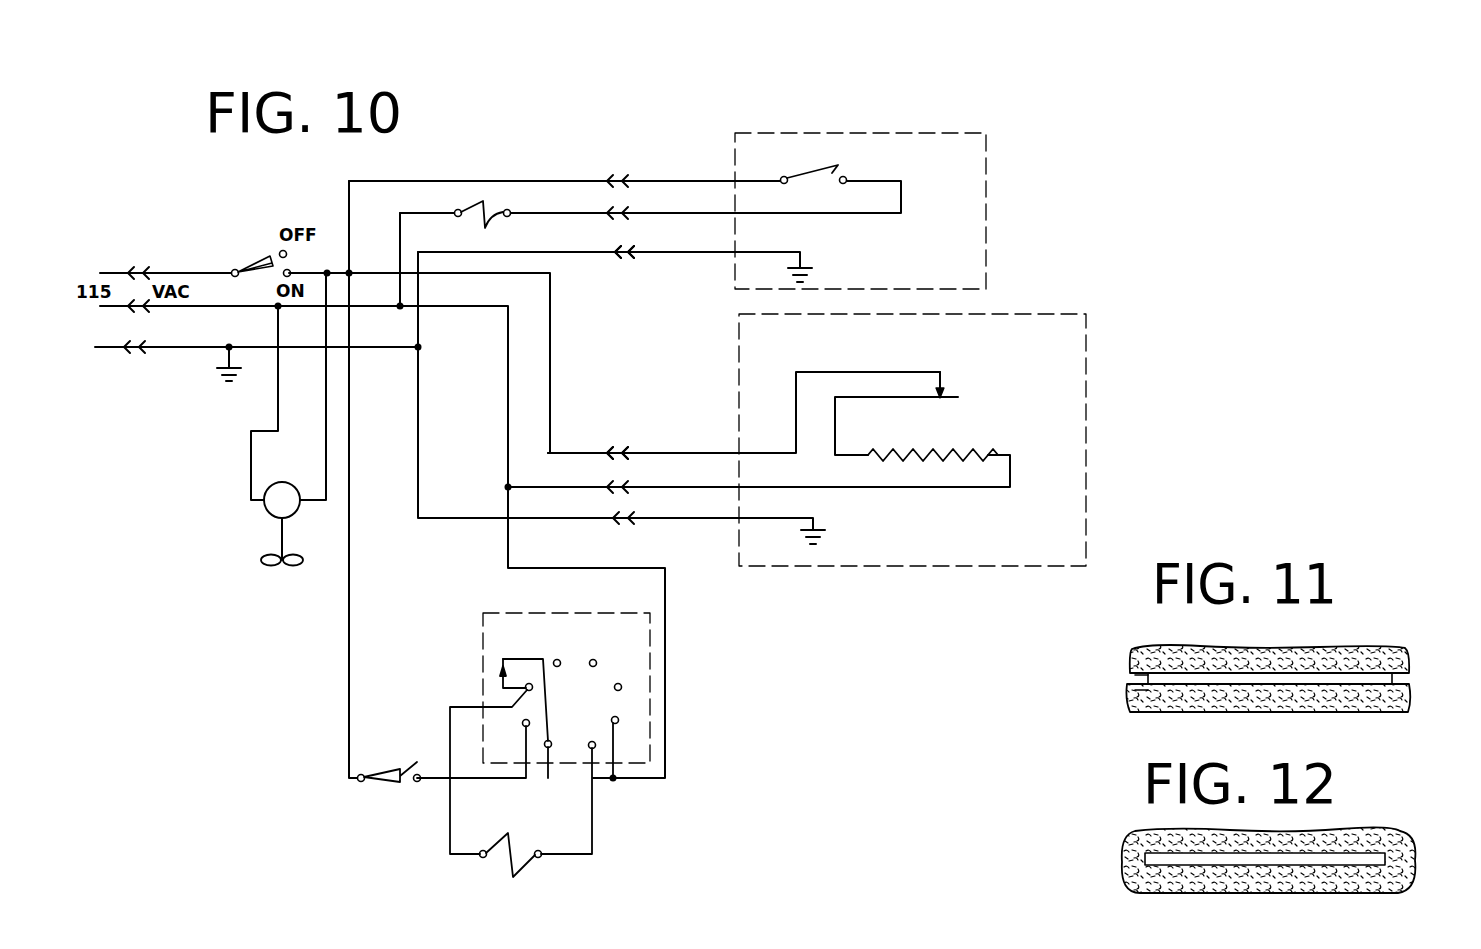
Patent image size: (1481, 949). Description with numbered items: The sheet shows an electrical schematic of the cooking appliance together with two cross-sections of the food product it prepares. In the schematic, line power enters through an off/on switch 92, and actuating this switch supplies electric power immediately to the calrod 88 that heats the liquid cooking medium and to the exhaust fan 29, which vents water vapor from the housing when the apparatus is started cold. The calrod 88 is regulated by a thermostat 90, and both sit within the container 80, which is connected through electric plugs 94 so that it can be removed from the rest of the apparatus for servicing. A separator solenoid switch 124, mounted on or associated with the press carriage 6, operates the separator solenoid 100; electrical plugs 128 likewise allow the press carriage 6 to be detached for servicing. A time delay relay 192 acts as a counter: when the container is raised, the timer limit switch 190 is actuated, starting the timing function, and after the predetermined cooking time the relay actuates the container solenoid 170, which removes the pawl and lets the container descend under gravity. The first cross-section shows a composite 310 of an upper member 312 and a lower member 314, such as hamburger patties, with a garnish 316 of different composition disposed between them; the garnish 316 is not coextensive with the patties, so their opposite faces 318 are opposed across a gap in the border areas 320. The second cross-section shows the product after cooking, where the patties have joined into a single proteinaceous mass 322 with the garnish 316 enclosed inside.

In FIG. 10, the press carriage 6 is at (961, 252).
In FIG. 10, the exhaust fan 29 is at (263, 512).
In FIG. 10, the container 80 is at (1055, 532).
In FIG. 10, the calrod 88 is at (937, 452).
In FIG. 10, the thermostat 90 is at (948, 393).
In FIG. 10, the off/on switch 92 is at (235, 269).
In FIG. 10, the electric plugs 94 is at (611, 440).
In FIG. 10, the separator solenoid 100 is at (491, 197).
In FIG. 10, the separator solenoid switch 124 is at (818, 163).
In FIG. 10, the electrical plugs 128 is at (611, 262).
In FIG. 10, the container solenoid 170 is at (527, 866).
In FIG. 10, the timer limit switch 190 is at (387, 790).
In FIG. 10, the time delay relay 192 is at (634, 714).
In FIG. 11, the composite 310 is at (1266, 678).
In FIG. 11, the upper member 312 is at (1272, 665).
In FIG. 11, the lower member 314 is at (1220, 700).
In FIG. 11, the garnish 316 is at (1189, 675).
In FIG. 12, the garnish 316 is at (1282, 858).
In FIG. 11, the opposite faces 318 is at (1135, 690).
In FIG. 11, the border areas 320 is at (1130, 639).
In FIG. 12, the single proteinaceous mass 322 is at (1185, 883).